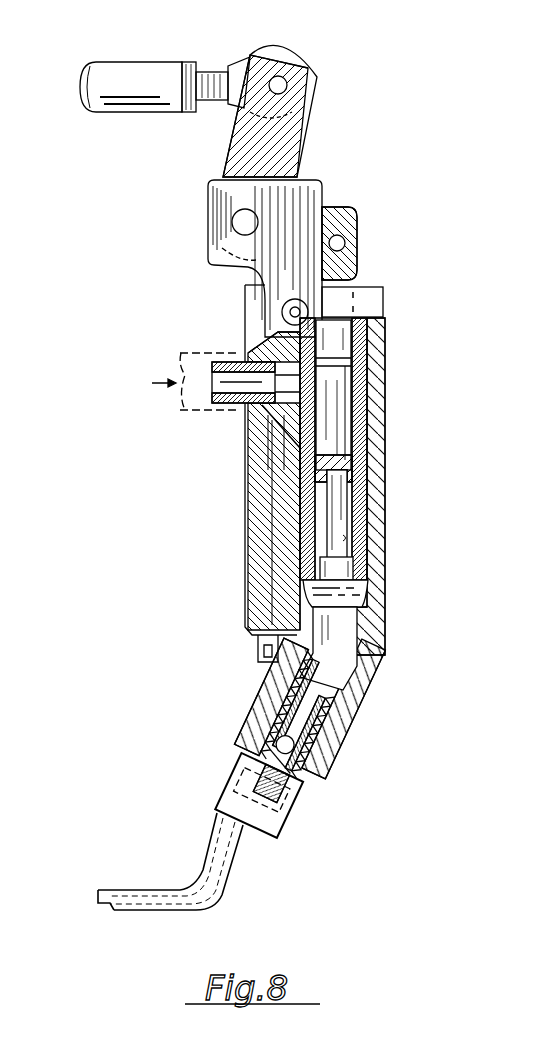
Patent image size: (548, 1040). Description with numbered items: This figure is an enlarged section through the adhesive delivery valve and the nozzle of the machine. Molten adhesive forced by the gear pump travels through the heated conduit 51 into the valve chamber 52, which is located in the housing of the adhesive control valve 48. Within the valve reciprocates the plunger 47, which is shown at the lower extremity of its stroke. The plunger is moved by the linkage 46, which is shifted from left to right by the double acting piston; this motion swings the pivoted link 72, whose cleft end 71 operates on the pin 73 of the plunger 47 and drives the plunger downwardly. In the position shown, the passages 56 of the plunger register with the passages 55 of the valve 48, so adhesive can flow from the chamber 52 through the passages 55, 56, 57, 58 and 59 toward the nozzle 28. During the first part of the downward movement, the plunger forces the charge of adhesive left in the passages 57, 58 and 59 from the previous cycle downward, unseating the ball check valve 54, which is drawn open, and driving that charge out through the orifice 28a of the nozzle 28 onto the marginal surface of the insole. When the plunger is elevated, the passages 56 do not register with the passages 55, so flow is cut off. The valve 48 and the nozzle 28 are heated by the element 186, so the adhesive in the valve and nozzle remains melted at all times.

The linkage 46 is at (168, 52).
The pivoted link 72 is at (290, 143).
The cleft end 71 is at (357, 227).
The pin 73 is at (345, 244).
The heated conduit 51 is at (235, 356).
The valve chamber 52 is at (283, 433).
The plunger 47 is at (340, 420).
The adhesive control valve 48 is at (400, 447).
The passages 55 is at (312, 482).
The passages 56 is at (320, 505).
The passage 57 is at (352, 552).
The heating element 186 is at (268, 645).
The passage 58 is at (335, 718).
The ball check valve 54 is at (296, 752).
The passage 59 is at (280, 785).
The nozzle 28 is at (145, 870).
The orifice 28a is at (104, 910).